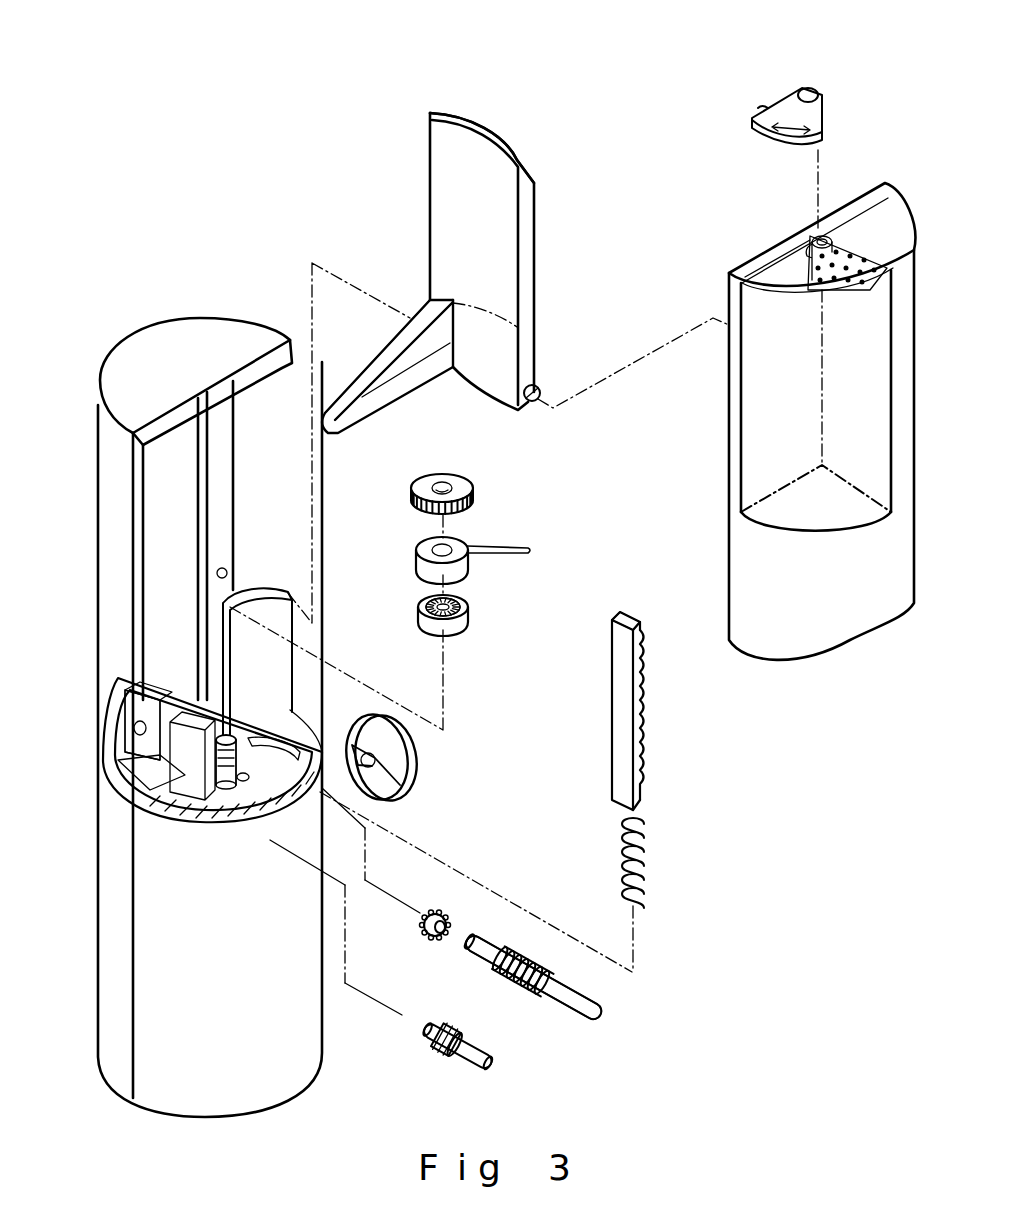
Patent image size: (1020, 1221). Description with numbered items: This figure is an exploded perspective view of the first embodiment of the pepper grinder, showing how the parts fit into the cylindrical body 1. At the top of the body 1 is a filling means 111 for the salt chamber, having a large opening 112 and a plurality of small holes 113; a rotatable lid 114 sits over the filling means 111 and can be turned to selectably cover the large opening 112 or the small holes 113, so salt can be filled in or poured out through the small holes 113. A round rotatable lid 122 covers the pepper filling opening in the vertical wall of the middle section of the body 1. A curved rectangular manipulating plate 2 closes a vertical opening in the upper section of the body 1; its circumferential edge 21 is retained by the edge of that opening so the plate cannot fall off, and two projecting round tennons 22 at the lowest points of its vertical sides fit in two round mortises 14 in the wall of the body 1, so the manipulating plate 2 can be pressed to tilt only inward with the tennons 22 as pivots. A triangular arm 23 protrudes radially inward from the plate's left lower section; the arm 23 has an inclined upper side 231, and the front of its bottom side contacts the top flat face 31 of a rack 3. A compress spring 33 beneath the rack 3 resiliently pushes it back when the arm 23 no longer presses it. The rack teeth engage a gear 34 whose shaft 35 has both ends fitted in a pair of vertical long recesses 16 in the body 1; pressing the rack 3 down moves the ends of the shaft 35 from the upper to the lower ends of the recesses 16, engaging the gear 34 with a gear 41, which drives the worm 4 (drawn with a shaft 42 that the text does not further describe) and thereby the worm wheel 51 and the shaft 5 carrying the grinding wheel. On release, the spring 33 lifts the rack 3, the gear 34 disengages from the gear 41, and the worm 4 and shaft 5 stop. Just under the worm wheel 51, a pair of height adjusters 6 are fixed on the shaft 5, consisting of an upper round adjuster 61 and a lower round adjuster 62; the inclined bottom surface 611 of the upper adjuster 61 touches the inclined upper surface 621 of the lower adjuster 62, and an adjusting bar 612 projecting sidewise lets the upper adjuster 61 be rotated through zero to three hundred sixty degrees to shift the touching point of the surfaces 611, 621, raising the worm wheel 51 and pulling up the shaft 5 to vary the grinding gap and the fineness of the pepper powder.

The body 1 is at (97, 574).
The round mortises 14 is at (228, 572).
The long recesses 16 is at (183, 713).
The shaft 5 is at (230, 735).
The manipulating plate 2 is at (535, 262).
The circumferential edge 21 is at (485, 127).
The round tennons 22 is at (542, 400).
The triangular arm 23 is at (415, 383).
The inclined upper side 231 is at (372, 365).
The worm wheel 51 is at (465, 483).
The height adjusters 6 is at (391, 563).
The upper round adjuster 61 is at (458, 547).
The inclined bottom surface 611 is at (466, 570).
The adjusting bar 612 is at (533, 548).
The lower round adjuster 62 is at (447, 625).
The inclined upper surface 621 is at (418, 612).
The rack 3 is at (612, 726).
The top flat face 31 is at (628, 612).
The compress spring 33 is at (623, 860).
The round rotatable lid 122 is at (418, 770).
The gear 41 is at (425, 935).
The worm 4 is at (508, 987).
The shaft 42 is at (482, 940).
The shaft 35 is at (424, 1038).
The gear 34 is at (447, 1060).
The filling means 111 is at (780, 247).
The large opening 112 is at (772, 277).
The small holes 113 is at (852, 253).
The rotatable lid 114 is at (787, 105).